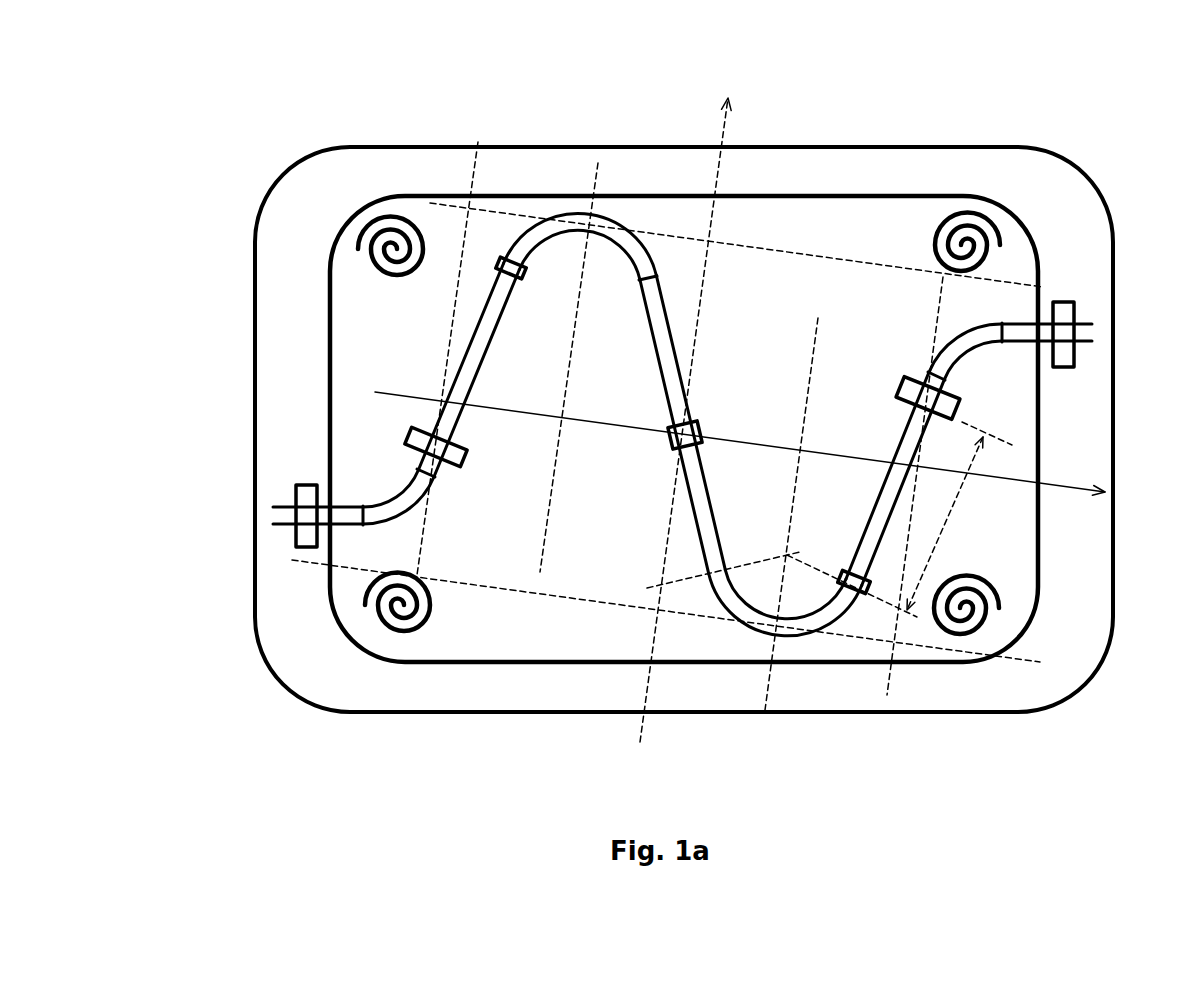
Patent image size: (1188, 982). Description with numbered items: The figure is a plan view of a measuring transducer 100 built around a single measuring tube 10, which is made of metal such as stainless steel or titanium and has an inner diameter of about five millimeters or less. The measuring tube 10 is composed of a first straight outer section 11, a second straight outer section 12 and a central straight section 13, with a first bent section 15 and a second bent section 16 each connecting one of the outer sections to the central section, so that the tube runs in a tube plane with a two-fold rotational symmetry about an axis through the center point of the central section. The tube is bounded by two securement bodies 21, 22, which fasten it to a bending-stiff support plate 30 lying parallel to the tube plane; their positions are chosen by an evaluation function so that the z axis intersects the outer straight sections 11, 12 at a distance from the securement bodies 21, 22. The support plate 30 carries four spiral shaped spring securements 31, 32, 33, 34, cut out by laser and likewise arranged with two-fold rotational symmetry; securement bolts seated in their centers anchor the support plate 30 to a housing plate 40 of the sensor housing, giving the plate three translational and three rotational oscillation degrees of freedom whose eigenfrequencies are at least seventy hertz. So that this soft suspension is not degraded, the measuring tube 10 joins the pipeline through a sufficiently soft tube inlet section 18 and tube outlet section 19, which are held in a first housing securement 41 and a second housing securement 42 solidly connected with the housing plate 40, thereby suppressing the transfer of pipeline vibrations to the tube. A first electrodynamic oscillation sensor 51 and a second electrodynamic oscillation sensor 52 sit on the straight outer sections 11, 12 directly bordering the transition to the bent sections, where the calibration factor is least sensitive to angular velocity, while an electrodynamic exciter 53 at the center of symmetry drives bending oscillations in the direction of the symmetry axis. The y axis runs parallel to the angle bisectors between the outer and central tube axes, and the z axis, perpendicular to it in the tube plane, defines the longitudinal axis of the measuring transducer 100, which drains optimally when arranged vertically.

The measuring transducer 100 is at (273, 118).
The measuring tube 10 is at (687, 411).
The first straight outer section 11 is at (890, 493).
The second straight outer section 12 is at (472, 358).
The central straight section 13 is at (673, 380).
The first bent section 15 is at (790, 623).
The second bent section 16 is at (572, 212).
The tube inlet section 18 is at (390, 495).
The tube outlet section 19 is at (970, 357).
The securement body 21 is at (940, 402).
The securement body 22 is at (412, 432).
The support plate 30 is at (330, 248).
The spiral shaped spring securement 31 is at (978, 628).
The spiral shaped spring securement 32 is at (975, 223).
The spiral shaped spring securement 33 is at (370, 223).
The spiral shaped spring securement 34 is at (383, 630).
The housing plate 40 is at (255, 243).
The first housing securement 41 is at (307, 530).
The second housing securement 42 is at (1060, 317).
The first electrodynamic oscillation sensor 51 is at (855, 588).
The second electrodynamic oscillation sensor 52 is at (511, 262).
The electrodynamic exciter 53 is at (678, 385).